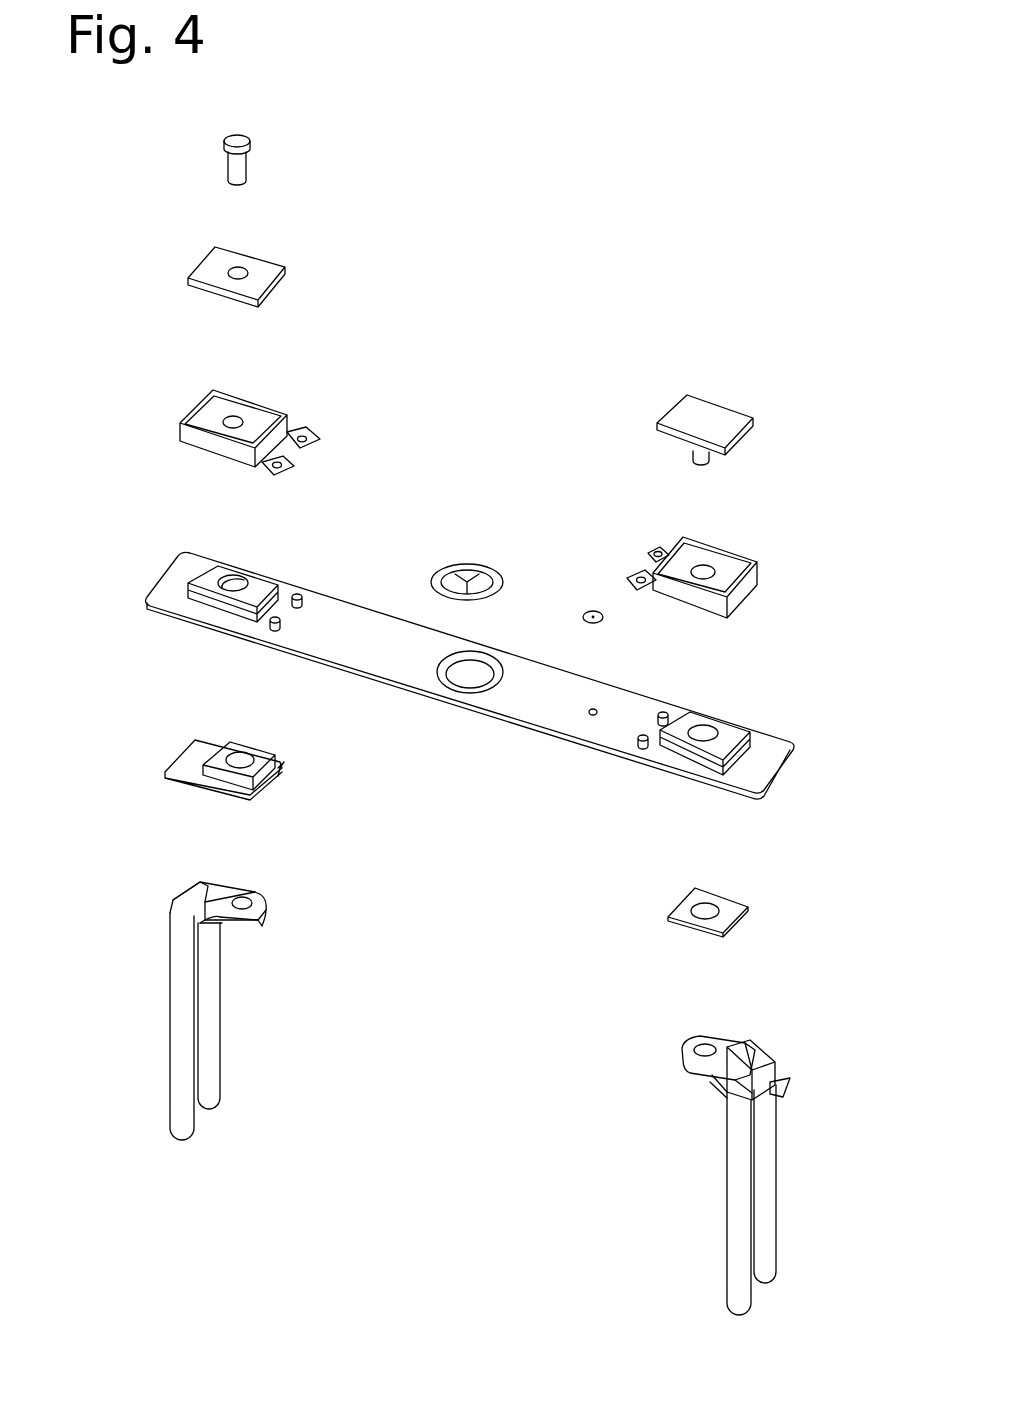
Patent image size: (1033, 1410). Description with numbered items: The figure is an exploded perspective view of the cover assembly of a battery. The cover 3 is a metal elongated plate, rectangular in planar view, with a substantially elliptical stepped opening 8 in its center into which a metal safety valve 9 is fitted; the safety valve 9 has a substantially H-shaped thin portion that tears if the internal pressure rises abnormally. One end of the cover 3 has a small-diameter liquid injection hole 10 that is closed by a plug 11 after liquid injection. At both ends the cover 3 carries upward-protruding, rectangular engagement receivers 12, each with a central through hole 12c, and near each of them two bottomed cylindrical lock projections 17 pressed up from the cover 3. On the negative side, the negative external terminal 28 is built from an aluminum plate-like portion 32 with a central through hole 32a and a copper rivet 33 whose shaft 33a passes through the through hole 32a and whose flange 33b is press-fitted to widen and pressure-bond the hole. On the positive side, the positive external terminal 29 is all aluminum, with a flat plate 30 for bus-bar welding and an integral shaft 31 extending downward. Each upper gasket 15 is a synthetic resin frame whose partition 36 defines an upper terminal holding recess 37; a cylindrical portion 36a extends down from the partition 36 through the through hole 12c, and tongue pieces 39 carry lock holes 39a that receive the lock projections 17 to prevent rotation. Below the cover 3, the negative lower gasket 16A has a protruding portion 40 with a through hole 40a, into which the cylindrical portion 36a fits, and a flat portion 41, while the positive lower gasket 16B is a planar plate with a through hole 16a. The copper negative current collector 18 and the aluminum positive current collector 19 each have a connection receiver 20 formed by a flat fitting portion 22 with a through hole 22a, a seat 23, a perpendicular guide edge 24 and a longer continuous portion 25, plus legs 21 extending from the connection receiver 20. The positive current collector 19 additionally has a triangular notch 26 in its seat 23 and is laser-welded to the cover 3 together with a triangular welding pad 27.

The cover 3 is at (350, 605).
The opening 8 is at (480, 658).
The safety valve 9 is at (467, 563).
The liquid injection hole 10 is at (596, 708).
The plug 11 is at (592, 612).
The engagement receiver 12 is at (215, 565).
The through hole 12c is at (240, 572).
The upper gasket 15 is at (292, 420).
The negative lower gasket 16A is at (285, 763).
The positive lower gasket 16B is at (680, 905).
The through hole 16a is at (705, 896).
The lock projection 17 is at (300, 594).
The negative current collector 18 is at (282, 999).
The positive current collector 19 is at (698, 1161).
The connection receiver 20 is at (268, 898).
The leg 21 is at (178, 1000).
The fitting portion 22 is at (228, 893).
The through hole 22a is at (245, 897).
The seat 23 is at (185, 903).
The guide edge 24 is at (263, 915).
The continuous portion 25 is at (220, 925).
The notch 26 is at (748, 1055).
The welding pad 27 is at (790, 1082).
The negative external terminal 28 is at (417, 152).
The positive external terminal 29 is at (560, 408).
The flat plate 30 is at (662, 425).
The shaft 31 is at (690, 462).
The plate-like portion 32 is at (287, 266).
The through hole 32a is at (238, 268).
The rivet 33 is at (363, 133).
The shaft 33a is at (246, 162).
The flange 33b is at (252, 140).
The partition 36 is at (202, 420).
The cylindrical portion 36a is at (233, 416).
The terminal holding recess 37 is at (255, 400).
The tongue piece 39 is at (310, 452).
The lock hole 39a is at (307, 438).
The protruding portion 40 is at (215, 752).
The through hole 40a is at (243, 752).
The flat portion 41 is at (185, 760).